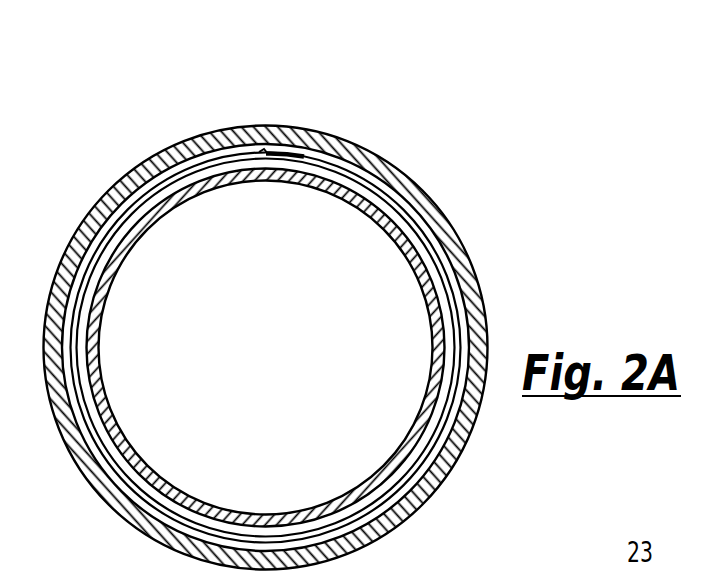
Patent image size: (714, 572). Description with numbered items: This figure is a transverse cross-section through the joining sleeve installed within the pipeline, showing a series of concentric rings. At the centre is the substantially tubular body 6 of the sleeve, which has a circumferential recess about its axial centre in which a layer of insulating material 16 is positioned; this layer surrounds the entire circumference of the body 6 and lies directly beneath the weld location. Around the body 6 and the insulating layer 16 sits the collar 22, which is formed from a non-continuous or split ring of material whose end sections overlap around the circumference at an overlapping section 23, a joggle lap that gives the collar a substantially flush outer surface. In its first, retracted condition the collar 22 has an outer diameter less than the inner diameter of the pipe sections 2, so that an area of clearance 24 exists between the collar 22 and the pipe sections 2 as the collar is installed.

The pipe sections 2 is at (86, 228).
The collar 22 is at (449, 277).
The area of clearance 24 is at (406, 206).
The overlapping section 23 is at (279, 150).
The tubular body 6 is at (122, 450).
The layer of insulating material 16 is at (410, 457).